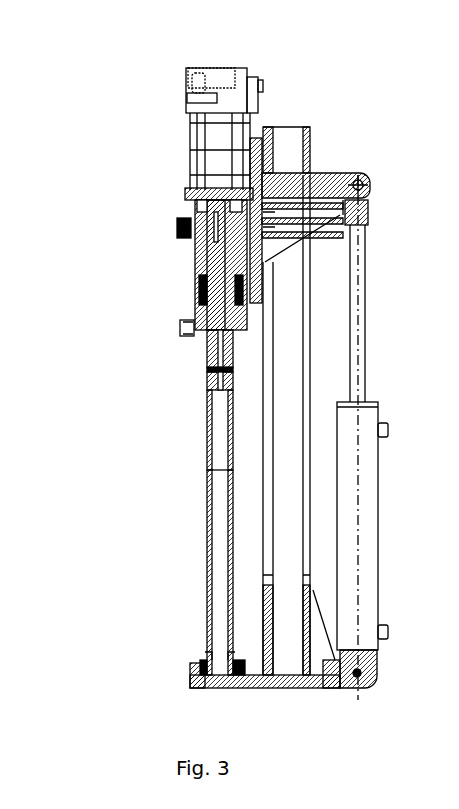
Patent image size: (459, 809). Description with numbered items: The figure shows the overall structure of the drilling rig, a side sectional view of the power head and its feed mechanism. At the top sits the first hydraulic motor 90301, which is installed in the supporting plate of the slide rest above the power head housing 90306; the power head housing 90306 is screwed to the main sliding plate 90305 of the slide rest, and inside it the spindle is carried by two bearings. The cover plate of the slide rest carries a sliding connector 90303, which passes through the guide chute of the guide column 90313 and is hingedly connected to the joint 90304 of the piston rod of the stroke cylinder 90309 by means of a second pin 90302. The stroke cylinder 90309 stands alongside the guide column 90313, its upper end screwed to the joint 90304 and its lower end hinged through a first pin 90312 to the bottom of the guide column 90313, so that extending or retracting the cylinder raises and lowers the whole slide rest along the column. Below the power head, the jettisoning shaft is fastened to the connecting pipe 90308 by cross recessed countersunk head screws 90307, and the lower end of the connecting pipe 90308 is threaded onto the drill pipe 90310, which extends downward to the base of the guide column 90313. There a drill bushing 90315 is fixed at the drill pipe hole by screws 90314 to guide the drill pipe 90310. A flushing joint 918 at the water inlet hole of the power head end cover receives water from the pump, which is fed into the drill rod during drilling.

The first hydraulic motor 90301 is at (232, 103).
The second pin 90302 is at (262, 140).
The sliding connector 90303 is at (368, 186).
The joint of a piston rod of the stroke cylinder 90304 is at (280, 186).
The main sliding plate 90305 is at (188, 187).
The power head housing 90306 is at (188, 263).
The flushing joint 918 is at (207, 347).
The cross recessed countersunk head screws 90307 is at (207, 367).
The connecting pipe 90308 is at (207, 413).
The stroke cylinder 90309 is at (350, 493).
The drill pipe 90310 is at (208, 502).
The first pin 90312 is at (333, 660).
The guide column 90313 is at (267, 648).
The screws 90314 is at (208, 652).
The drill bushing 90315 is at (193, 673).